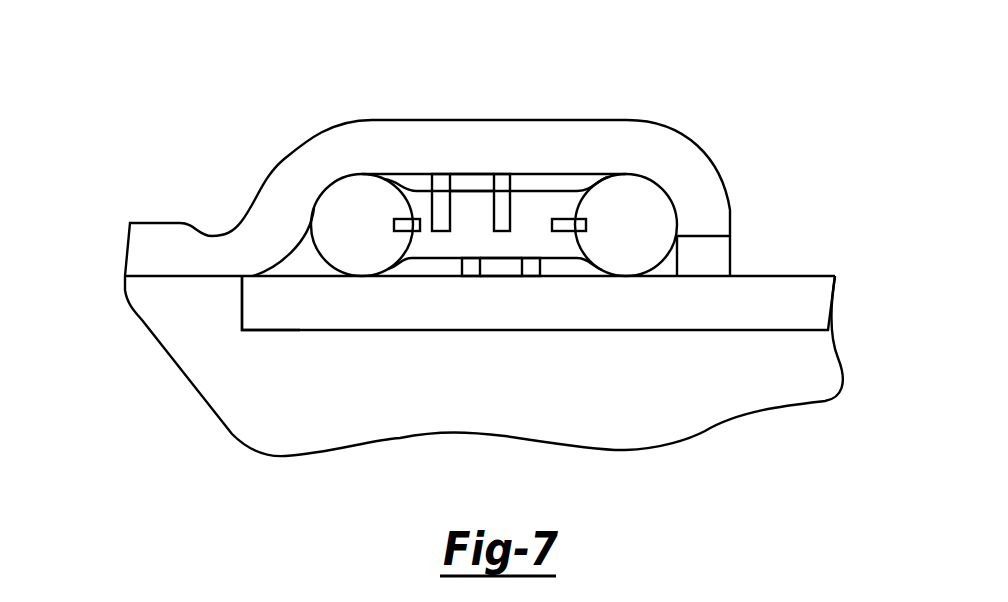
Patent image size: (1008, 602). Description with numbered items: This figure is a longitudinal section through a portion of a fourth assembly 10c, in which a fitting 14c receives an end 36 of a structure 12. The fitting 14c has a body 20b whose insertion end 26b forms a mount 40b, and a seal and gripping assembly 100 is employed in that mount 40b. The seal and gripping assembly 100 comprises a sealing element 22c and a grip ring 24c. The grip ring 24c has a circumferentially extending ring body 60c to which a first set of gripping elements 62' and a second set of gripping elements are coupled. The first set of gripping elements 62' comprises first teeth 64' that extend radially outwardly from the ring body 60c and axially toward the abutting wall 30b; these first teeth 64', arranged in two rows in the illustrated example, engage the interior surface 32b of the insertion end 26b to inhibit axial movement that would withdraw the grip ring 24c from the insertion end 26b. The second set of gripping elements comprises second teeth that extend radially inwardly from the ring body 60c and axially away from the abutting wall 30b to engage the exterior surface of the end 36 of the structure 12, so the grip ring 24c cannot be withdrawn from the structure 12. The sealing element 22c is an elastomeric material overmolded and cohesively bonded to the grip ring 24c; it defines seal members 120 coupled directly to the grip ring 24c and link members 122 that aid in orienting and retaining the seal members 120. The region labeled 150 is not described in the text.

The fourth assembly 10c is at (792, 155).
The structure 12 is at (810, 283).
The fitting 14c is at (157, 240).
The body 20b is at (138, 259).
The sealing element 22c is at (319, 277).
The grip ring 24c is at (572, 222).
The insertion end 26b is at (453, 130).
The abutting wall 30b is at (710, 222).
The interior surface 32b is at (397, 178).
The end 36 is at (255, 330).
The mount 40b is at (348, 122).
The ring body 60c is at (407, 234).
The first set of gripping elements 62' is at (431, 154).
The first teeth 64' is at (520, 154).
The seal and gripping assembly 100 is at (335, 165).
The seal members 120 is at (333, 200).
The link members 122 is at (472, 193).
The lower channel 150 is at (502, 270).